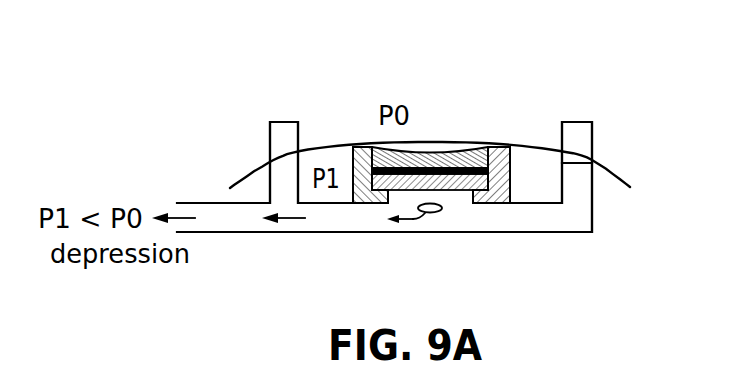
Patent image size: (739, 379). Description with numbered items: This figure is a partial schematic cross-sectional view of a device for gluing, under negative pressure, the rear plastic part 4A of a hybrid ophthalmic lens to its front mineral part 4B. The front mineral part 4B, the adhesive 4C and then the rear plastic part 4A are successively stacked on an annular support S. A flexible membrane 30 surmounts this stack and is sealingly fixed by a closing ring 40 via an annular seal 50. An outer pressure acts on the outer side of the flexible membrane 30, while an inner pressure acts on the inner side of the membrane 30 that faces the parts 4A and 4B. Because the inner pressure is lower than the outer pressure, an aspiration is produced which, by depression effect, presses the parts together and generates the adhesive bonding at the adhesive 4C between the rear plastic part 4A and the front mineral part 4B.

The flexible membrane 30 is at (635, 162).
The closing ring 40 is at (277, 103).
The annular seal 50 is at (585, 134).
The annular support S is at (365, 192).
The rear plastic part 4A is at (478, 152).
The front mineral part 4B is at (450, 182).
The adhesive 4C is at (425, 160).